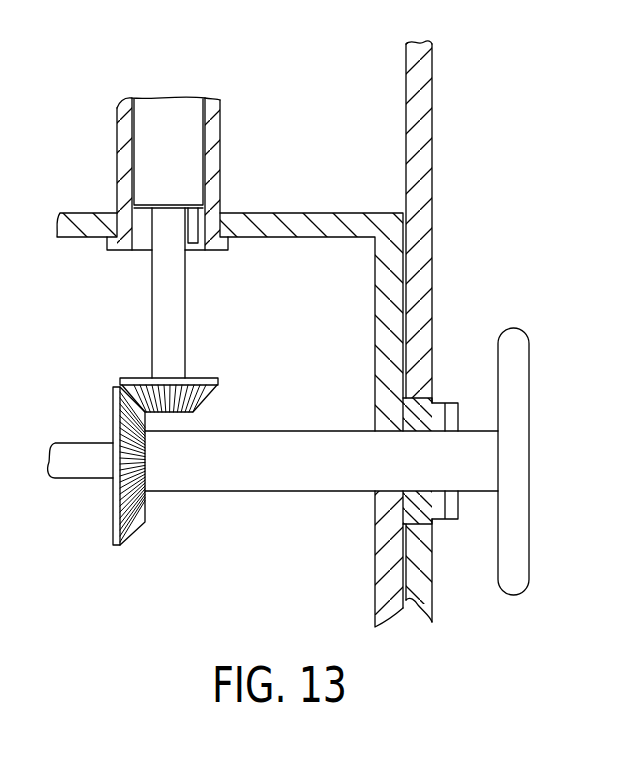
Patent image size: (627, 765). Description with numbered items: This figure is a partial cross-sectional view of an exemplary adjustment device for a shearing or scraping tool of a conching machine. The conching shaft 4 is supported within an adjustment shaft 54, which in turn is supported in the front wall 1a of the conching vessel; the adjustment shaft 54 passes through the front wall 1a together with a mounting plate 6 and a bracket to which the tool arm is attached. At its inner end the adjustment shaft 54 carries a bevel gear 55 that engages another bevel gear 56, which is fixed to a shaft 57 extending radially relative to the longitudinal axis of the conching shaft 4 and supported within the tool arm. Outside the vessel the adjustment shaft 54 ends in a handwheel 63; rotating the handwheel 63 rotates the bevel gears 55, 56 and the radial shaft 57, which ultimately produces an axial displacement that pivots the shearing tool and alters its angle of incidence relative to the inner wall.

The mounting bracket 6 is at (317, 212).
The front wall 1a is at (432, 125).
The shaft 57 is at (164, 307).
The bevel gear 56 is at (212, 396).
The bevel gear 55 is at (131, 540).
The adjustment shaft 54 is at (307, 482).
The conching shaft 4 is at (80, 443).
The handwheel 63 is at (530, 428).